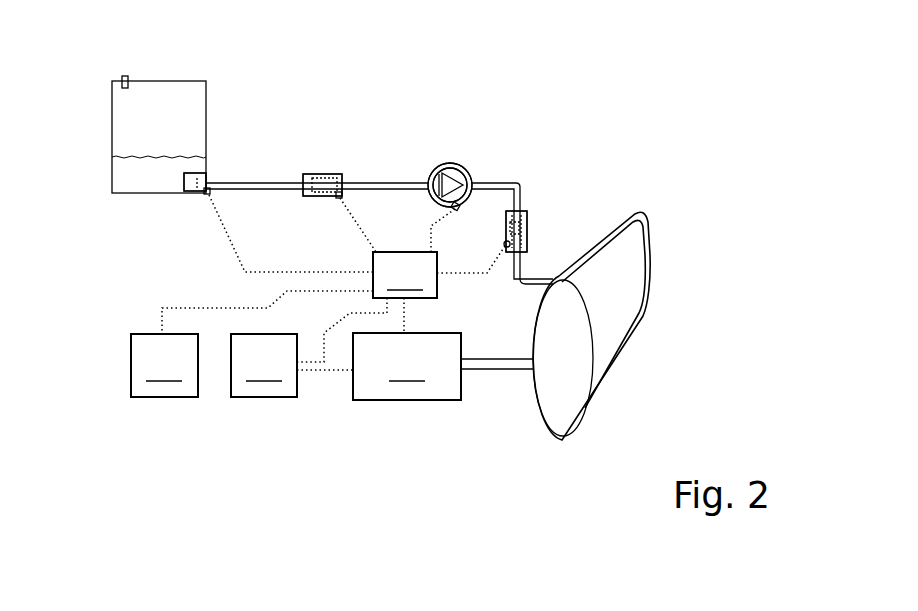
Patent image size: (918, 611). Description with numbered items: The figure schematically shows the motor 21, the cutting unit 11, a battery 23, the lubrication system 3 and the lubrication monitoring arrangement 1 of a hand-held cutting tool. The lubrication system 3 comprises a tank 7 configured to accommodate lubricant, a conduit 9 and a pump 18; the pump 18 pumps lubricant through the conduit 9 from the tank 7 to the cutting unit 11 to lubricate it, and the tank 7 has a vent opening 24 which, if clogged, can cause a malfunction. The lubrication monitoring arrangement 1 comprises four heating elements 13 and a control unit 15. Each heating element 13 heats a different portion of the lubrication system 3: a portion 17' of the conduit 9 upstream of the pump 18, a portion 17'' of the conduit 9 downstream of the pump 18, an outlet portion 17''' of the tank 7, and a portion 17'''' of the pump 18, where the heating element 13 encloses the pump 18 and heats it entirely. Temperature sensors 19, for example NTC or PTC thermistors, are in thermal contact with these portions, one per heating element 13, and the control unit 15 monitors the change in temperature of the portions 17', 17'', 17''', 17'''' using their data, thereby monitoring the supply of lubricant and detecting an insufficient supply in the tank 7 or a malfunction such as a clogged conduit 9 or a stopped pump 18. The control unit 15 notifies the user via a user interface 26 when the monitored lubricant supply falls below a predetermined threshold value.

The lubrication monitoring arrangement 1 is at (381, 100).
The lubrication system 3 is at (278, 60).
The tank 7 is at (206, 112).
The vent opening 24 is at (124, 76).
The conduit 9 is at (401, 190).
The cutting unit 11 is at (628, 192).
The heating element 13 is at (190, 193).
The control unit 15 is at (333, 282).
The portion of the conduit upstream of the pump 17' is at (340, 159).
The portion of the conduit downstream of the pump 17'' is at (556, 232).
The outlet portion of the tank 17''' is at (165, 230).
The portion of the pump 17'''' is at (482, 134).
The pump 18 is at (450, 178).
The temperature sensor 19 is at (336, 198).
The motor 21 is at (443, 366).
The battery 23 is at (264, 365).
The user interface 26 is at (164, 365).